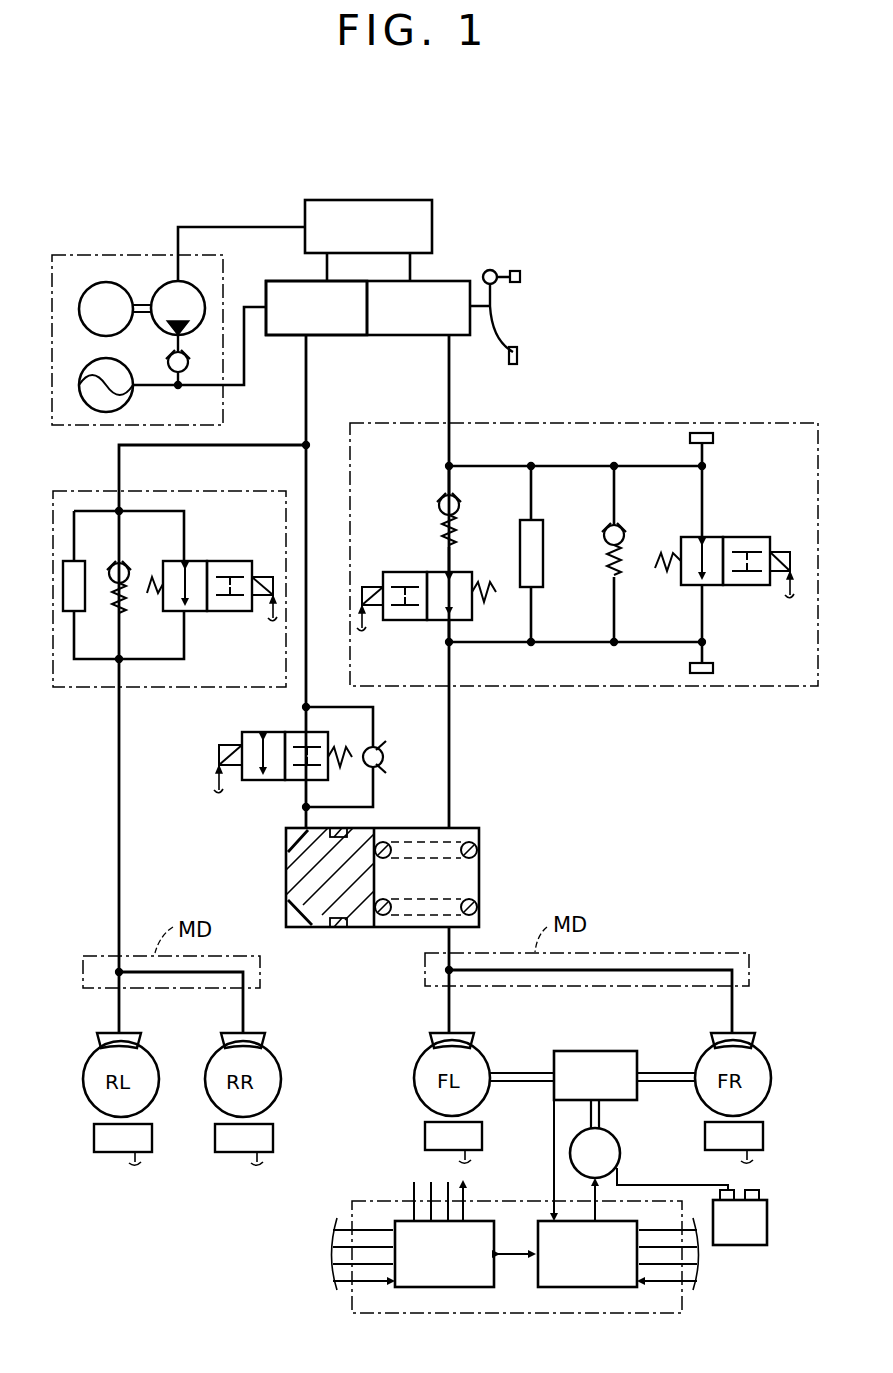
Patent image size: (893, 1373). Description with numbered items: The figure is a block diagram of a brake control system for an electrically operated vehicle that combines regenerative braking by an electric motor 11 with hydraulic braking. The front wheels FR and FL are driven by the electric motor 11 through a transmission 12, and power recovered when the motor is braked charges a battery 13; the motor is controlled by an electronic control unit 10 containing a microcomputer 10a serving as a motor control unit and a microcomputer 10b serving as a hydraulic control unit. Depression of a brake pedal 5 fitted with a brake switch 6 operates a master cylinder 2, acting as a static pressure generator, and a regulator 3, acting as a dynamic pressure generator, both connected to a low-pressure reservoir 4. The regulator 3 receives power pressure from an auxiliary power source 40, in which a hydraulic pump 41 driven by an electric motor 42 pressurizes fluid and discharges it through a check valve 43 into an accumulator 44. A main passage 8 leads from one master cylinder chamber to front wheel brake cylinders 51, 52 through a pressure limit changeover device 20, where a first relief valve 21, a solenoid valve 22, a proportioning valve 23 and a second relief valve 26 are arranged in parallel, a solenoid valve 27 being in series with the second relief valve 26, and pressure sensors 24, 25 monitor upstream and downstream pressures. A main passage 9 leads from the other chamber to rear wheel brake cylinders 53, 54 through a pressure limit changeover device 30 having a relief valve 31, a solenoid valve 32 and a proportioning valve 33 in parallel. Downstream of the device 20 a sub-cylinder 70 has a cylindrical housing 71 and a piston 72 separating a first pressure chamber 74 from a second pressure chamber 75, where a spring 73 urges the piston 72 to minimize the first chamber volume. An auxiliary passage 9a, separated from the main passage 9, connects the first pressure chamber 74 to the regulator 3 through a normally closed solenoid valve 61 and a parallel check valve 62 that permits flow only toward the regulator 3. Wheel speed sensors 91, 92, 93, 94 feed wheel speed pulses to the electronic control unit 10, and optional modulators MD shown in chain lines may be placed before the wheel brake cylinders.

The master cylinder 2 is at (371, 301).
The regulator 3 is at (322, 316).
The low-pressure reservoir 4 is at (331, 200).
The brake pedal 5 is at (517, 353).
The brake switch 6 is at (520, 277).
The main passage 8 is at (449, 385).
The main passage 9 is at (305, 385).
The auxiliary passage 9a is at (307, 505).
The electronic control unit 10 is at (492, 1235).
The microcomputer 10a is at (587, 1254).
The microcomputer 10b is at (444, 1254).
The electric motor 11 is at (618, 1137).
The transmission 12 is at (587, 1050).
The battery 13 is at (740, 1217).
The pressure limit changeover device 20 is at (584, 539).
The first relief valve 21 is at (627, 547).
The solenoid valve 22 is at (730, 538).
The proportioning valve 23 is at (543, 557).
The pressure sensor 24 is at (713, 438).
The pressure sensor 25 is at (713, 668).
The second relief valve 26 is at (440, 495).
The solenoid valve 27 is at (418, 572).
The pressure limit changeover device 30 is at (169, 574).
The relief valve 31 is at (126, 568).
The solenoid valve 32 is at (210, 560).
The proportioning valve 33 is at (96, 557).
The auxiliary power source 40 is at (178, 314).
The hydraulic pump 41 is at (191, 274).
The electric motor 42 is at (93, 283).
The check valve 43 is at (169, 358).
The accumulator 44 is at (95, 358).
The wheel brake cylinder 51 is at (746, 1033).
The wheel brake cylinder 52 is at (466, 1033).
The wheel brake cylinder 53 is at (254, 1033).
The wheel brake cylinder 54 is at (132, 1033).
The solenoid valve 61 is at (277, 730).
The check valve 62 is at (380, 743).
The sub-cylinder 70 is at (383, 868).
The cylindrical housing 71 is at (472, 883).
The piston 72 is at (287, 863).
The spring 73 is at (423, 850).
The first pressure chamber 74 is at (295, 830).
The second pressure chamber 75 is at (480, 832).
The wheel speed sensor 91 is at (734, 1142).
The wheel speed sensor 92 is at (453, 1142).
The wheel speed sensor 93 is at (244, 1144).
The wheel speed sensor 94 is at (123, 1144).